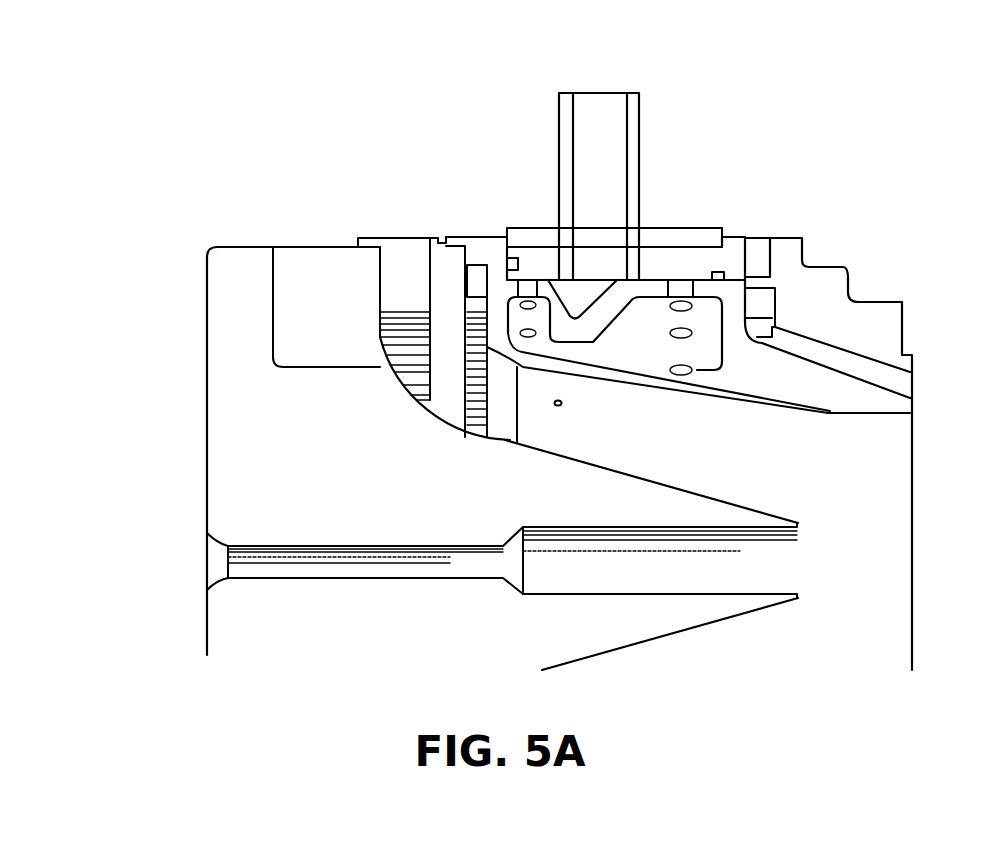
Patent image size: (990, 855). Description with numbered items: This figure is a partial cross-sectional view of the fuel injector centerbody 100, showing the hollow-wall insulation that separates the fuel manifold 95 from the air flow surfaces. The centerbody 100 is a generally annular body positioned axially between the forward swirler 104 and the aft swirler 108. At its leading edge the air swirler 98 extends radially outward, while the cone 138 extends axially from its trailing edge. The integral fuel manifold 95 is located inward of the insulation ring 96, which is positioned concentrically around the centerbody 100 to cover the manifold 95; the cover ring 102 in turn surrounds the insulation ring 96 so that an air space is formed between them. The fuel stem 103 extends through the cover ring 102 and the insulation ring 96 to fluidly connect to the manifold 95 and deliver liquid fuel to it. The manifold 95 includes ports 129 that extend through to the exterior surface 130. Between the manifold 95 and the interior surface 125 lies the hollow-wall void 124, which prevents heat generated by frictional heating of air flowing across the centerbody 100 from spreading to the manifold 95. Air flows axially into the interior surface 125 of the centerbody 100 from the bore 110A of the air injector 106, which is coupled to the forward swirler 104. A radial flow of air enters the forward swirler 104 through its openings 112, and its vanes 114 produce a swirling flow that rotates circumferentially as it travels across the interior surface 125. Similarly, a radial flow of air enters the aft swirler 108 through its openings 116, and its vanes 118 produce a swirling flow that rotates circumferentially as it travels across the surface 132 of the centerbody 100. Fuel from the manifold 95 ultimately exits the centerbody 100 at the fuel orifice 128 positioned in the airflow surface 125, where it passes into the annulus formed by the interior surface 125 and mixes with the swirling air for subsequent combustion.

The fuel manifold 95 is at (585, 298).
The insulation ring 96 is at (702, 260).
The air swirler 98 is at (473, 248).
The centerbody 100 is at (489, 236).
The cover ring 102 is at (673, 237).
The fuel stem 103 is at (606, 130).
The forward swirler 104 is at (357, 219).
The air injector 106 is at (324, 490).
The aft swirler 108 is at (862, 300).
The bore 110A is at (257, 560).
The openings 112 is at (377, 347).
The vanes 114 is at (393, 326).
The openings 116 is at (775, 327).
The vanes 118 is at (760, 303).
The hollow-wall void 124 is at (628, 322).
The interior surface 125 is at (750, 480).
The fuel orifice 128 is at (558, 406).
The ports 129 is at (680, 290).
The exterior surface 130 is at (740, 277).
The surface 132 is at (870, 378).
The cone 138 is at (887, 405).